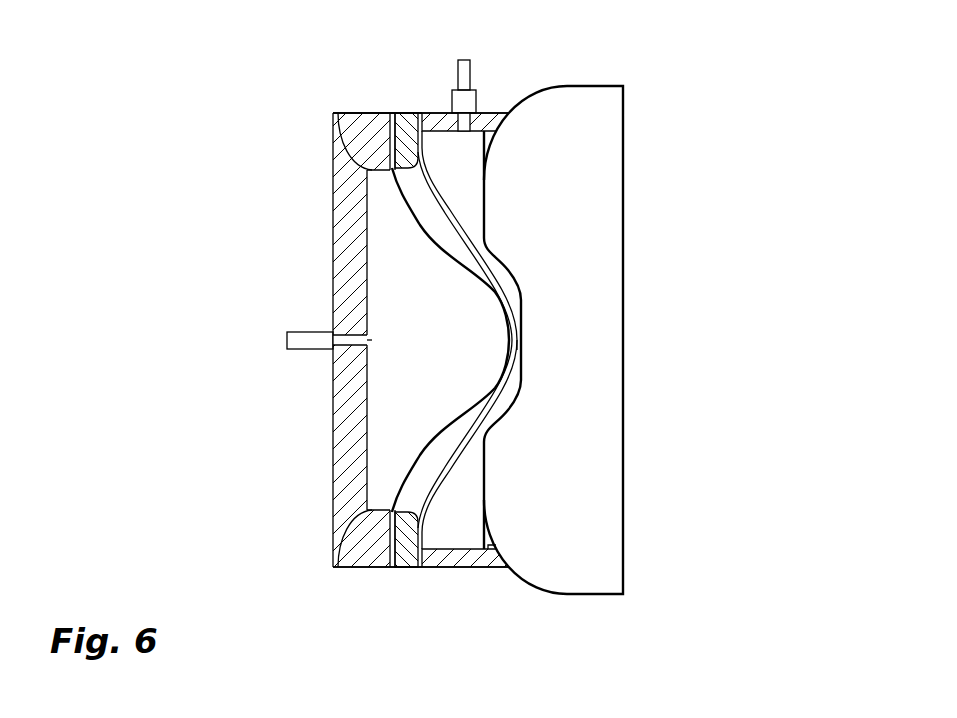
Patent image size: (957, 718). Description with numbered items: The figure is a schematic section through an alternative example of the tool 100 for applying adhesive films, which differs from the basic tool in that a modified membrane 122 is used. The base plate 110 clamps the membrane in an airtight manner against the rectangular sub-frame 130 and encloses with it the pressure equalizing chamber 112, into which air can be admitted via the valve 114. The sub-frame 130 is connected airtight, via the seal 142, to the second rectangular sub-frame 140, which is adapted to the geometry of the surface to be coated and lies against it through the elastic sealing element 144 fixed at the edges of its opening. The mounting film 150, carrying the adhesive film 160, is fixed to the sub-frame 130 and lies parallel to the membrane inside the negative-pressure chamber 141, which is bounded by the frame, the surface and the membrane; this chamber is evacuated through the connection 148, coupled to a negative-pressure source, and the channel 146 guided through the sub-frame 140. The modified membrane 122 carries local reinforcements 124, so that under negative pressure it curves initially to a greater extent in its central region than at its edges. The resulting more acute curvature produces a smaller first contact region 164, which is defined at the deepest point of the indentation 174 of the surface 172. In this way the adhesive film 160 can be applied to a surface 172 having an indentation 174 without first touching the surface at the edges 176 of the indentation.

The tool 100 is at (213, 214).
The base plate 110 is at (347, 490).
The pressure equalizing chamber 112 is at (400, 317).
The valve 114 is at (307, 340).
The modified membrane 122 is at (427, 248).
The local reinforcements 124 is at (398, 198).
The rectangular sub-frame 130 is at (402, 113).
The rectangular sub-frame 140 is at (455, 557).
The negative-pressure chamber 141 is at (458, 178).
The seal 142 is at (403, 567).
The elastic sealing element 144 is at (492, 567).
The channel 146 is at (480, 113).
The connection 148 is at (462, 87).
The mounting film 150 is at (440, 467).
The adhesive film 160 is at (513, 302).
The first contact region 164 is at (543, 344).
The surface 172 is at (592, 163).
The indentation 174 is at (513, 397).
The edges of the indentation 176 is at (487, 423).